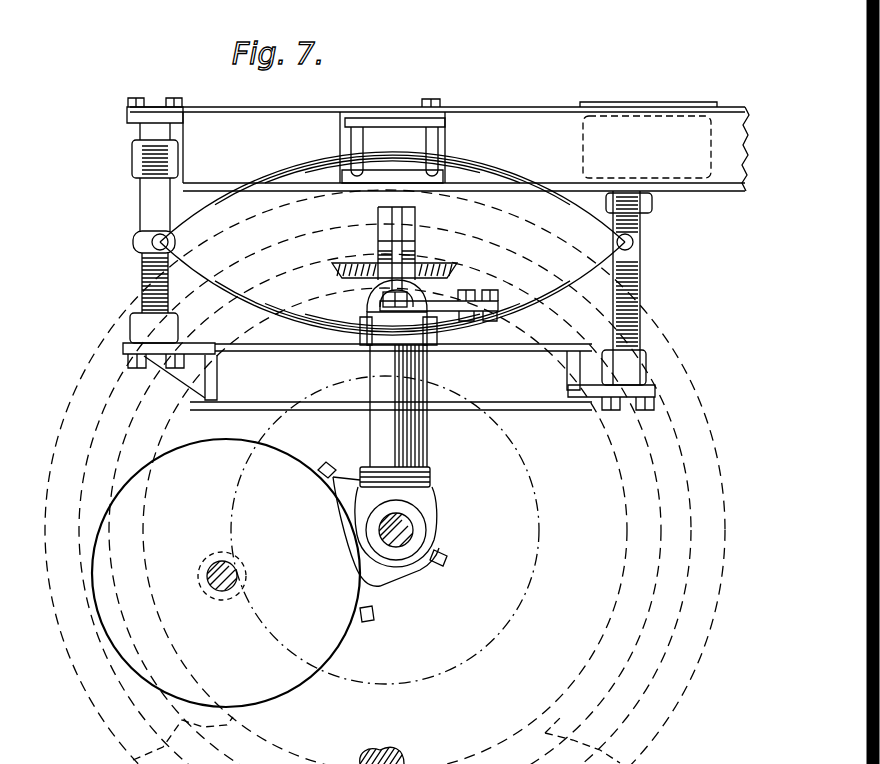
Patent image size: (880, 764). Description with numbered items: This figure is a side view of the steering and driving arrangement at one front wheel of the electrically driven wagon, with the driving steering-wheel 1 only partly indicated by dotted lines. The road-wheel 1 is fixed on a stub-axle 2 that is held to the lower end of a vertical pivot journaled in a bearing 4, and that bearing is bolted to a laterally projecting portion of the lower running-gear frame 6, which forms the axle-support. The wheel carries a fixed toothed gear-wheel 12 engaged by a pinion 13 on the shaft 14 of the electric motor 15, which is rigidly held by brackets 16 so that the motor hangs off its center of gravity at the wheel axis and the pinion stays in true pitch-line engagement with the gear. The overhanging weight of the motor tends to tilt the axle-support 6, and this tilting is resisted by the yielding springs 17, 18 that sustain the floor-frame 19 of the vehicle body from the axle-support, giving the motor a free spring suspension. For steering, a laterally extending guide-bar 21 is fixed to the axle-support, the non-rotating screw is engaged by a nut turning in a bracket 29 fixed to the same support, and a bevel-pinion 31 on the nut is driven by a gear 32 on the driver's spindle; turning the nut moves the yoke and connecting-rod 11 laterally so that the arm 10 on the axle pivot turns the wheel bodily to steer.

The road-wheel 1 is at (70, 434).
The stub-axle 2 is at (410, 523).
The bearing 4 is at (395, 416).
The lower running-gear frame 6 is at (391, 377).
The arm 10 is at (435, 338).
The connecting-rod 11 is at (497, 299).
The toothed gear-wheel 12 is at (544, 506).
The pinion 13 is at (215, 551).
The shaft 14 is at (222, 591).
The motor 15 is at (226, 573).
The brackets 16 is at (406, 573).
The side springs 17 is at (297, 172).
The springs 18 is at (140, 200).
The floor-frame 19 is at (439, 145).
The guide-bar 21 is at (448, 303).
The bracket 29 is at (415, 238).
The bevel-pinion 31 is at (370, 289).
The gear 32 is at (364, 265).